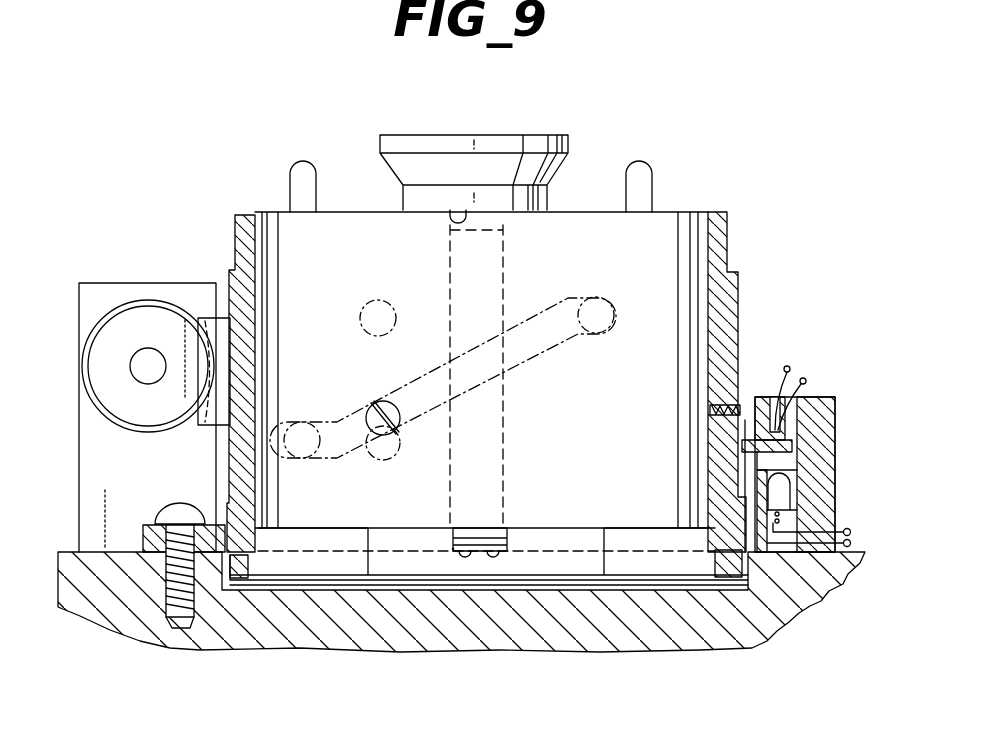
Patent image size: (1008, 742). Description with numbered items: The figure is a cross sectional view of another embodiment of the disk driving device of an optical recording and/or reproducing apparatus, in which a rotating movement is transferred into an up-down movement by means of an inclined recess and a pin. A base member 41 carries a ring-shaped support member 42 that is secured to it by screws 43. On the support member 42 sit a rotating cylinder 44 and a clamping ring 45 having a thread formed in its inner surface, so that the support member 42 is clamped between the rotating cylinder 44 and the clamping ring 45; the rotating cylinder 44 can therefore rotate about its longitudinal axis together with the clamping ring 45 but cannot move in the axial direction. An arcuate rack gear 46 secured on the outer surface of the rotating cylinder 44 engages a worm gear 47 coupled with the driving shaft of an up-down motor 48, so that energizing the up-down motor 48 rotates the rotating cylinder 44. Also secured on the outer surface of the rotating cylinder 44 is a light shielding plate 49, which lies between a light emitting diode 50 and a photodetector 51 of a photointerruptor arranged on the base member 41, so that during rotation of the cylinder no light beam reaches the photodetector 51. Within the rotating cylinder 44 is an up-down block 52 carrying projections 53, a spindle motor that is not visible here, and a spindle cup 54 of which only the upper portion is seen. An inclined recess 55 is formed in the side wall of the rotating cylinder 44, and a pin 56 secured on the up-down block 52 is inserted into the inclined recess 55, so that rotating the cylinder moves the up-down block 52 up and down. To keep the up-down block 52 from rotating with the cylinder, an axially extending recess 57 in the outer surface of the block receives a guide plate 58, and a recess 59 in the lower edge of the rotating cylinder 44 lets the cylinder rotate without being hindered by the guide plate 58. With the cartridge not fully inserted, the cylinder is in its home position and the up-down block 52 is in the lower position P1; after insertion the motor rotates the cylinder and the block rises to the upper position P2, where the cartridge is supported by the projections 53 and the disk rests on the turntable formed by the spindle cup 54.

The base member 41 is at (470, 630).
The support member 42 is at (209, 556).
The screws 43 is at (178, 503).
The rotating cylinder 44 is at (742, 292).
The clamping ring 45 is at (733, 580).
The arcuate rack gear 46 is at (228, 272).
The worm gear 47 is at (136, 300).
The up-down motor 48 is at (90, 280).
The light shielding plate 49 is at (792, 452).
The light emitting diode 50 is at (780, 486).
The photodetector 51 is at (808, 395).
The up-down block 52 is at (588, 228).
The projections 53 is at (300, 168).
The spindle cup 54 is at (493, 165).
The inclined recess 55 is at (556, 326).
The pin 56 is at (366, 425).
The recess 57 is at (458, 213).
The guide plate 58 is at (463, 292).
The recess 59 is at (382, 556).
The lower position P1 is at (396, 460).
The upper position P2 is at (372, 300).